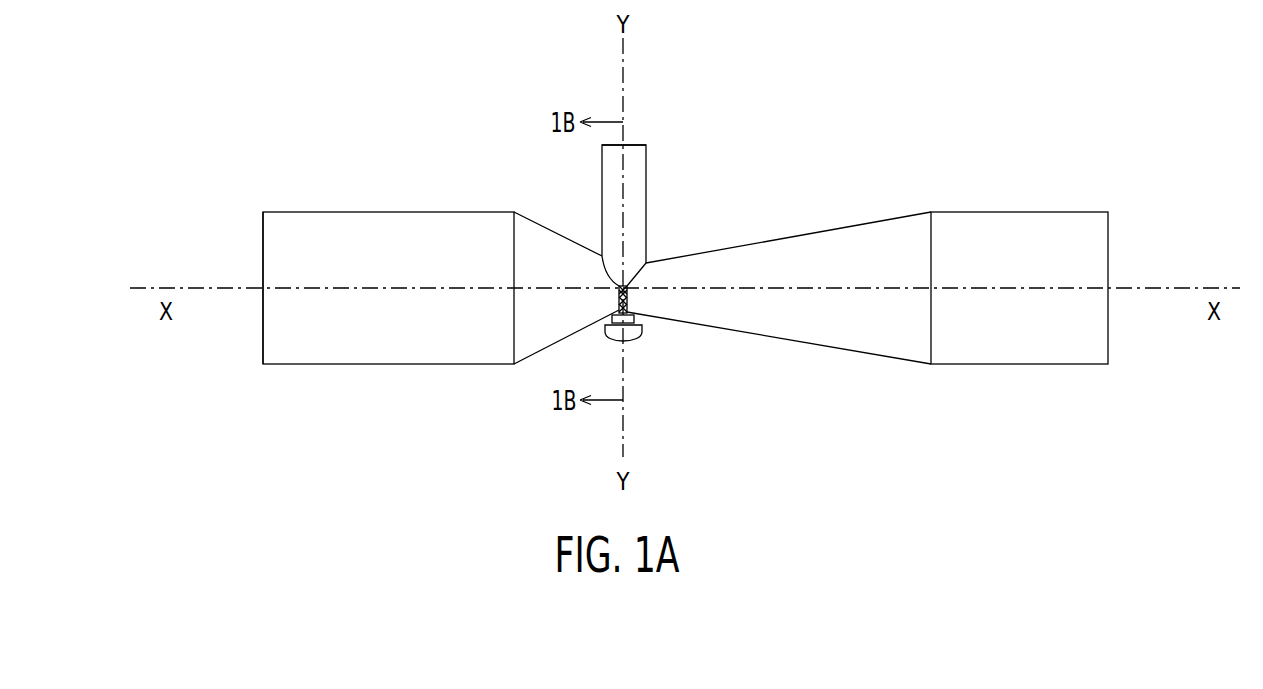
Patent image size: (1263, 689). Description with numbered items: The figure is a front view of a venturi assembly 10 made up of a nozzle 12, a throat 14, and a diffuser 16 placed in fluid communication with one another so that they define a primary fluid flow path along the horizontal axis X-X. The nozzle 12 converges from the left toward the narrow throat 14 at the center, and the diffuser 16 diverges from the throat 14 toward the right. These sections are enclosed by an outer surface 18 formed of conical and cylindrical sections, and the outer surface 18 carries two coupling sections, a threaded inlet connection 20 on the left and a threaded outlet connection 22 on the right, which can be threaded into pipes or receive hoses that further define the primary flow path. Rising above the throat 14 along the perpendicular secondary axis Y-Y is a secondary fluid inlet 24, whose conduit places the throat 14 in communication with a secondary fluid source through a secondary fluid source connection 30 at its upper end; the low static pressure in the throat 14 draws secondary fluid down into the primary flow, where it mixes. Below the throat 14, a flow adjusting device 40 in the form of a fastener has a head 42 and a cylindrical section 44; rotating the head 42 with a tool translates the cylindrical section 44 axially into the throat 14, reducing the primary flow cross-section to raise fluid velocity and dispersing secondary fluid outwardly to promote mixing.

The venturi assembly 10 is at (803, 128).
The nozzle 12 is at (382, 234).
The throat 14 is at (618, 300).
The diffuser 16 is at (850, 256).
The outer surface 18 is at (787, 233).
The threaded inlet connection 20 is at (263, 248).
The threaded outlet connection 22 is at (1108, 238).
The secondary fluid inlet 24 is at (647, 203).
The secondary fluid source connection 30 is at (633, 145).
The flow adjusting device 40 is at (644, 358).
The head 42 is at (603, 327).
The cylindrical section 44 is at (634, 320).